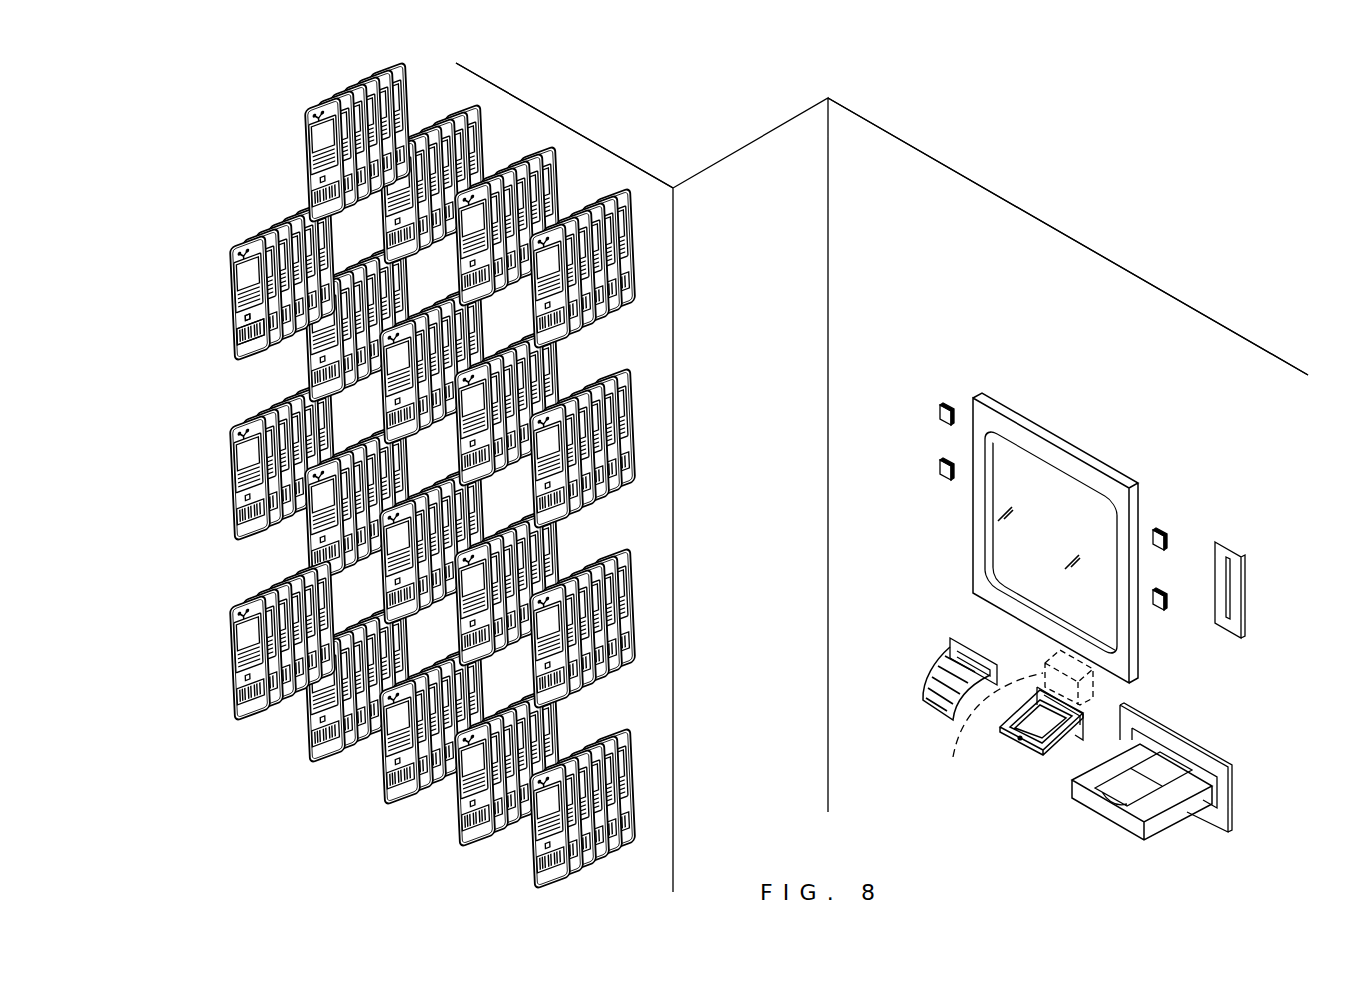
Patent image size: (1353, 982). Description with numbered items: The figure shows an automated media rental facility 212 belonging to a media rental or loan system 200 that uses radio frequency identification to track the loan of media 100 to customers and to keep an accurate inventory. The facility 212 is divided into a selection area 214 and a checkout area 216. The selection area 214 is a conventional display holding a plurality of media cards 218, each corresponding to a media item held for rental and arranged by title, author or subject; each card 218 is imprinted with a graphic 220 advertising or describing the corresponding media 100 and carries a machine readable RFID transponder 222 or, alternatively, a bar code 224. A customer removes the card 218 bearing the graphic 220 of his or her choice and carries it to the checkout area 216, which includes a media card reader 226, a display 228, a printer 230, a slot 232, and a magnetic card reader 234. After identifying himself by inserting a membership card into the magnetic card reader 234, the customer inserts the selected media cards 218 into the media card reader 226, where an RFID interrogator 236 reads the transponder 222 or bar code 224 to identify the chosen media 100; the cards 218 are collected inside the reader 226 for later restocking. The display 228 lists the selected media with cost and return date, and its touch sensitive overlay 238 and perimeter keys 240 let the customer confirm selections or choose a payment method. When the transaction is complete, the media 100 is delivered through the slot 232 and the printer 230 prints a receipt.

The media 100 is at (1157, 825).
The system 200 is at (1017, 173).
The media rental facility 212 is at (1090, 248).
The selection area 214 is at (558, 143).
The checkout area 216 is at (1224, 448).
The media card 218 is at (303, 142).
The graphic 220 is at (470, 418).
The RFID transponder 222 is at (245, 322).
The bar code 224 is at (248, 347).
The media card reader 226 is at (1067, 737).
The display 228 is at (1065, 508).
The printer 230 is at (950, 648).
The slot 232 is at (1220, 758).
The magnetic card reader 234 is at (1243, 597).
The RFID interrogator 236 is at (1006, 722).
The touch sensitive overlay 238 is at (1030, 468).
The perimeter keys 240 is at (940, 472).